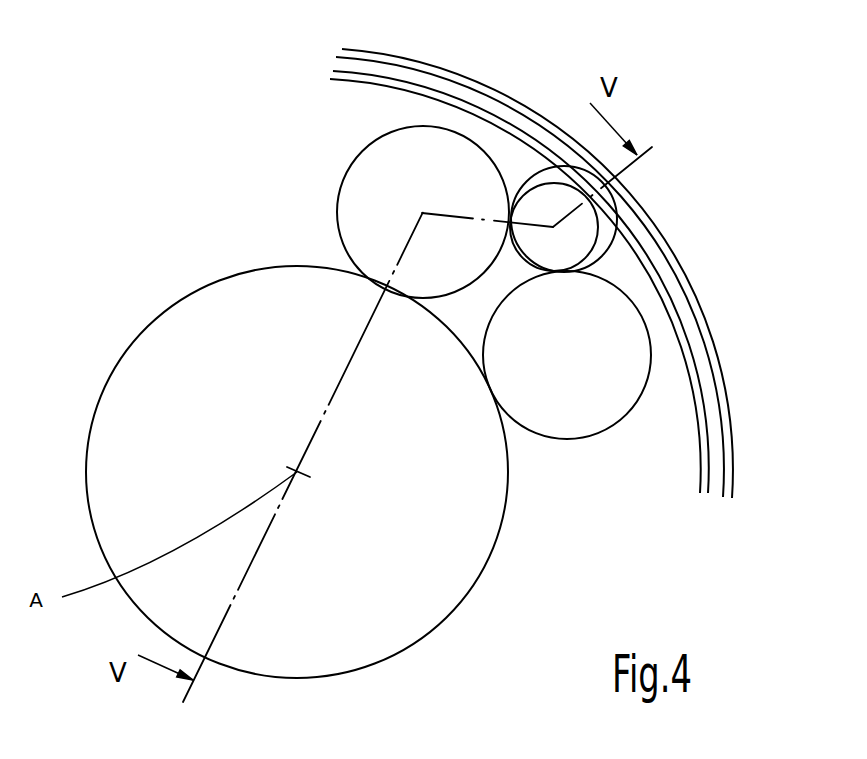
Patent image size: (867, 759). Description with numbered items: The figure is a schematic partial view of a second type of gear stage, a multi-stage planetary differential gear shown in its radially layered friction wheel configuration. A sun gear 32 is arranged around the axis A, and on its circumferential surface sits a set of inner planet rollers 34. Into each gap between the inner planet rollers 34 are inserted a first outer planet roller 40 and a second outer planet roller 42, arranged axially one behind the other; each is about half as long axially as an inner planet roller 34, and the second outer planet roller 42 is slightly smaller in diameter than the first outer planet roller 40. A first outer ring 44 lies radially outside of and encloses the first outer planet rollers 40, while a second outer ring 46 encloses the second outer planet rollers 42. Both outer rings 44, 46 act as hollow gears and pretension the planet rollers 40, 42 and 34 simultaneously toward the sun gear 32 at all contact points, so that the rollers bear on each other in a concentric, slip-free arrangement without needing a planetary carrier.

The sun gear 32 is at (467, 597).
The inner planet rollers 34 is at (595, 437).
The first outer planet roller 40 is at (568, 168).
The second outer planet roller 42 is at (542, 183).
The first outer ring 44 is at (723, 308).
The second outer ring 46 is at (667, 252).